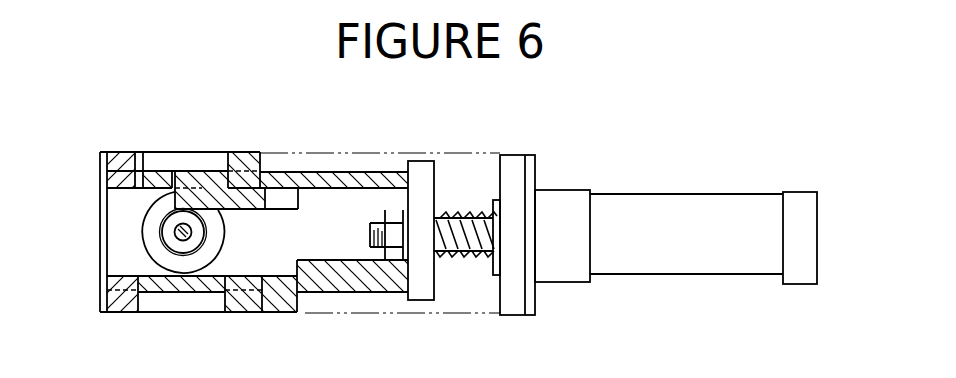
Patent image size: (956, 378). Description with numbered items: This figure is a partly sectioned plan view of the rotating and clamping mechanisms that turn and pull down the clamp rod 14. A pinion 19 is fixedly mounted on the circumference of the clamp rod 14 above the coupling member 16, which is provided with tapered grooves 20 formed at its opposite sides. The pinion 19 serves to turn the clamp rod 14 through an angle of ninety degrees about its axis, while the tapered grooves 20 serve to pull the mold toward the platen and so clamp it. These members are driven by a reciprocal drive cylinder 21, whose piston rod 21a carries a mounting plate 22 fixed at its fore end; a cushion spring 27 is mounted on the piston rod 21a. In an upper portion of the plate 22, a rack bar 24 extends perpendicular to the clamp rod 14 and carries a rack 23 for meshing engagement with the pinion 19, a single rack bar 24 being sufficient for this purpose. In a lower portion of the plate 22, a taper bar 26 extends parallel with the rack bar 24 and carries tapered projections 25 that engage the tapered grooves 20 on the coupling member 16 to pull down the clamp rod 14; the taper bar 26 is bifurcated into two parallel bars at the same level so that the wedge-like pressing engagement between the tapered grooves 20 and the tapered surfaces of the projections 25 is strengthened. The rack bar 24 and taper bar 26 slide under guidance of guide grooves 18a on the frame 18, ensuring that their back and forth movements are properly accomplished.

The clamp rod 14 is at (200, 208).
The coupling member 16 is at (170, 257).
The frame 18 is at (125, 146).
The guide grooves 18a is at (108, 151).
The pinion 19 is at (150, 234).
The tapered grooves 20 is at (150, 213).
The drive cylinder 21 is at (667, 210).
The piston rod 21a is at (472, 240).
The mounting plate 22 is at (421, 287).
The rack 23 is at (258, 192).
The rack bar 24 is at (385, 173).
The tapered projections 25 is at (319, 270).
The taper bar 26 is at (285, 283).
The cushion spring 27 is at (462, 212).